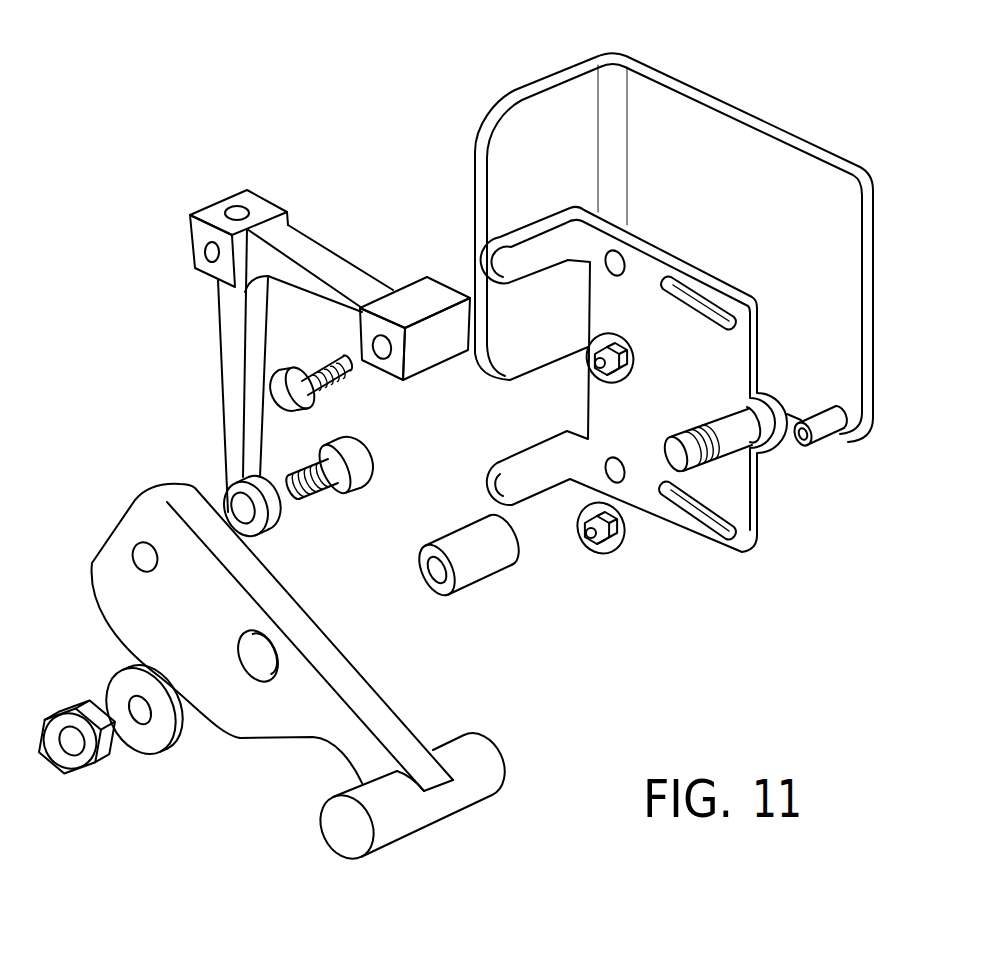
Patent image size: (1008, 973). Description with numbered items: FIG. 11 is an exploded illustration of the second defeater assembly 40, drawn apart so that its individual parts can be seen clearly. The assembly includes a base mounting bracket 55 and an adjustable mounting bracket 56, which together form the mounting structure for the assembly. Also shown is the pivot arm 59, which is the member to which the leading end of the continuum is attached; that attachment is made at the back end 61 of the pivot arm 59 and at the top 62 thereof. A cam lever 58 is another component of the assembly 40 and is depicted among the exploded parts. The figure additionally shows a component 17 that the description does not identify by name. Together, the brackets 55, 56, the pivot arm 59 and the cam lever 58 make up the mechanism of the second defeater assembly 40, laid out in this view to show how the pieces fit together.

The second defeater assembly 40 is at (787, 110).
The base mounting bracket 55 is at (740, 170).
The adjustable mounting bracket 56 is at (721, 377).
The top 62 is at (239, 175).
The back end 61 is at (180, 246).
The pivot arm 59 is at (225, 363).
The lever arm 17 is at (211, 625).
The cam lever 58 is at (145, 557).